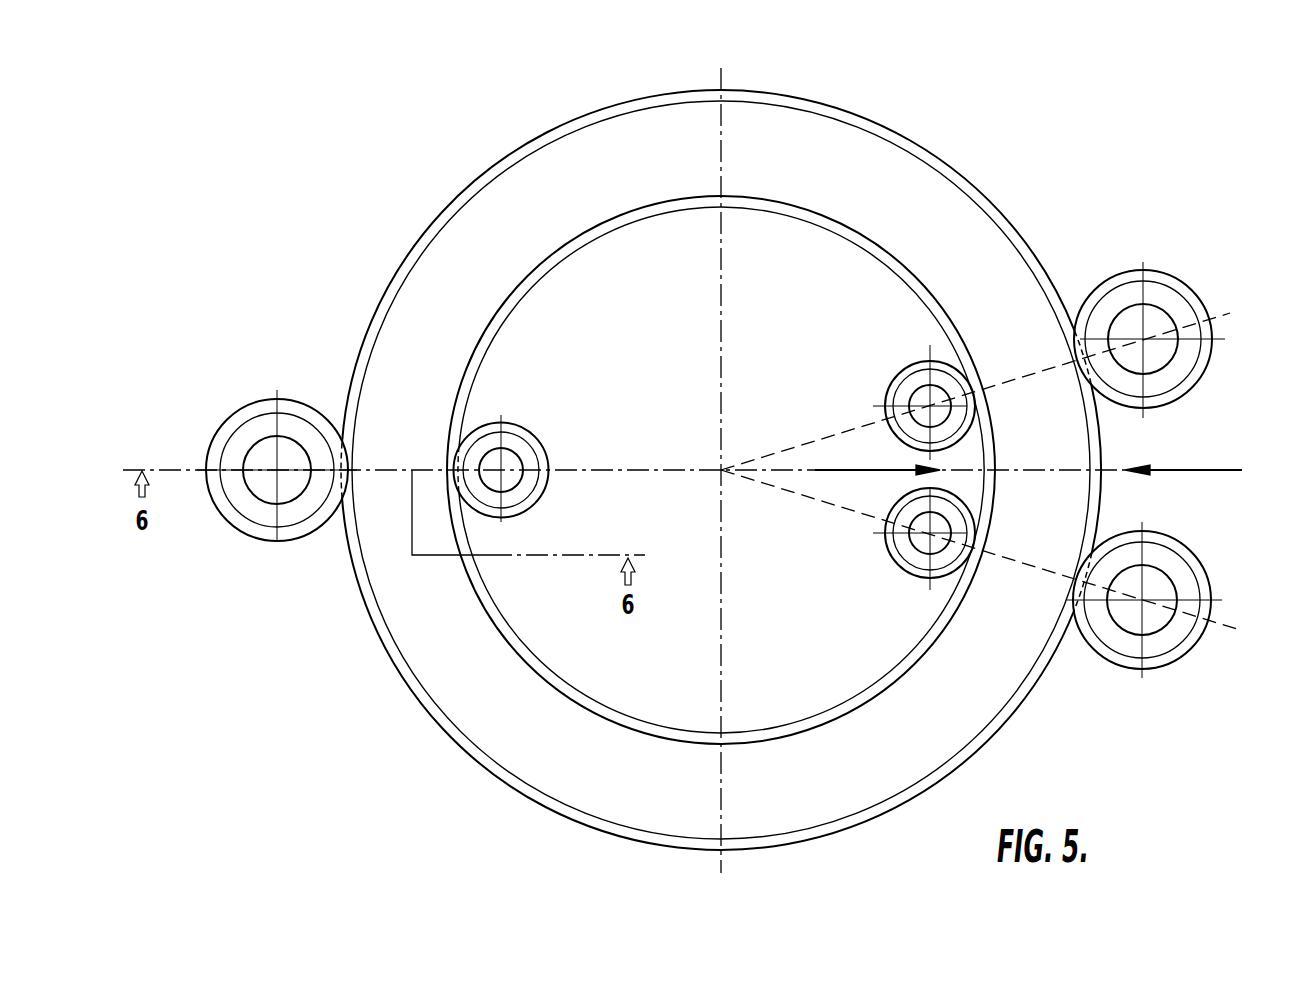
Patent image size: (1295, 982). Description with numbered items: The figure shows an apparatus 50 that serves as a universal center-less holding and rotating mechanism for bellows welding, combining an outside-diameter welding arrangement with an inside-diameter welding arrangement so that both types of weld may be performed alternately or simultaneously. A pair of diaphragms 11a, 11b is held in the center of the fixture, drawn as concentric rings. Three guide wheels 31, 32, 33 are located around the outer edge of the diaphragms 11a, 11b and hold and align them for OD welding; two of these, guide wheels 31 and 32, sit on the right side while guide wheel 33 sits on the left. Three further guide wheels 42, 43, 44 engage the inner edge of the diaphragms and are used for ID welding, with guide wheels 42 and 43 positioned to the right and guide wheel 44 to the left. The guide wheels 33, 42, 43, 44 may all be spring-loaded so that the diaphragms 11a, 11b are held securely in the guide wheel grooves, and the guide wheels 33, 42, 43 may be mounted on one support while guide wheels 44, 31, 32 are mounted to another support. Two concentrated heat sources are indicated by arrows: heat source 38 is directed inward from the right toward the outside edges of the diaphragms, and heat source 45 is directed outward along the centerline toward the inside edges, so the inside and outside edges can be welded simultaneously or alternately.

The apparatus 50 is at (1069, 82).
The diaphragm 11a is at (843, 138).
The diaphragm 11b is at (721, 465).
The guide wheel 33 is at (249, 418).
The guide wheel 44 is at (490, 445).
The guide wheel 42 is at (947, 370).
The guide wheel 43 is at (957, 565).
The guide wheel 32 is at (1192, 297).
The guide wheel 31 is at (1183, 577).
The concentrated heat source 45 is at (867, 470).
The concentrated heat source 38 is at (1205, 470).